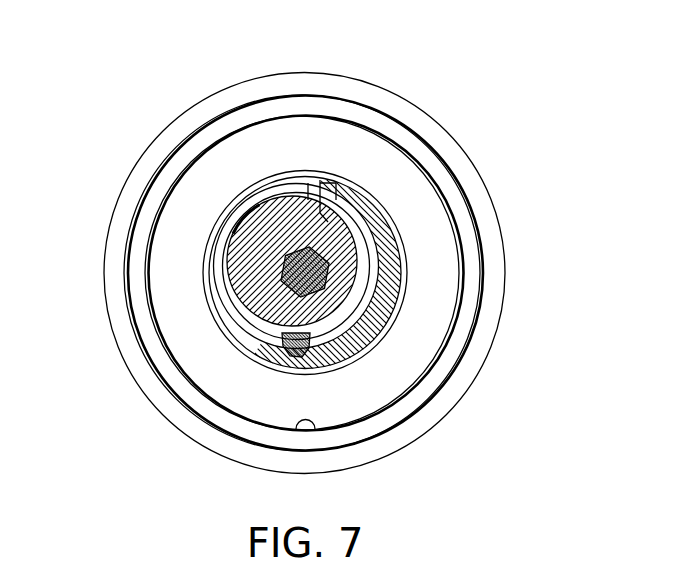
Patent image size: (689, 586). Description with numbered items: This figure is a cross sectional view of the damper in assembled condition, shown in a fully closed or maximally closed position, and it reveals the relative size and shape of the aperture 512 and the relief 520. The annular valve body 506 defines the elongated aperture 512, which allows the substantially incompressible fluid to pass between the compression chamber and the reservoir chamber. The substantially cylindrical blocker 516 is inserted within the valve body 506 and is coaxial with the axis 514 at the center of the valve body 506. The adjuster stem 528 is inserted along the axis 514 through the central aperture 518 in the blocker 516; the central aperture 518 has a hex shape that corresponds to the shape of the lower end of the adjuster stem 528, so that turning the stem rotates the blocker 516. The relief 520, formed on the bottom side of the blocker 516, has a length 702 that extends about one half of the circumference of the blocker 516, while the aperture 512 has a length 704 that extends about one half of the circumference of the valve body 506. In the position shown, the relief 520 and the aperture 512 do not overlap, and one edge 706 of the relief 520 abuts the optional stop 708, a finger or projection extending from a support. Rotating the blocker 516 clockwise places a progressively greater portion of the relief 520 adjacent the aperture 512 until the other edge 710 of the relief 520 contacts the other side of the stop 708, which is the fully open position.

The aperture 512 is at (232, 217).
The axis 514 is at (296, 247).
The blocker 516 is at (320, 197).
The central aperture 518 is at (283, 294).
The relief 520 is at (356, 233).
The valve body 506 is at (388, 283).
The adjuster stem 528 is at (362, 358).
The length 702 is at (368, 305).
The length 704 is at (290, 200).
The edge 706 is at (268, 340).
The stop 708 is at (306, 358).
The edge 710 is at (333, 178).